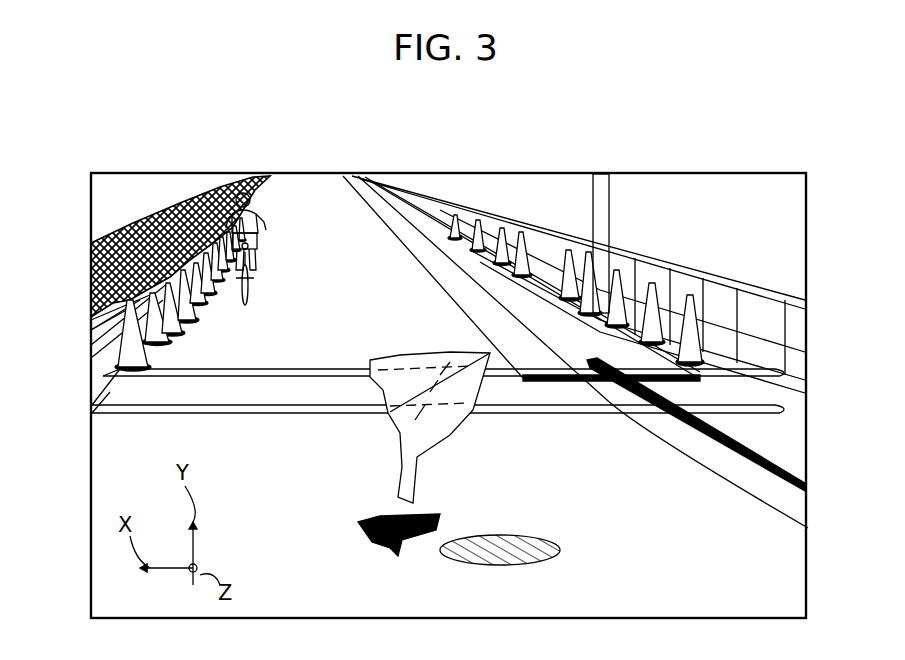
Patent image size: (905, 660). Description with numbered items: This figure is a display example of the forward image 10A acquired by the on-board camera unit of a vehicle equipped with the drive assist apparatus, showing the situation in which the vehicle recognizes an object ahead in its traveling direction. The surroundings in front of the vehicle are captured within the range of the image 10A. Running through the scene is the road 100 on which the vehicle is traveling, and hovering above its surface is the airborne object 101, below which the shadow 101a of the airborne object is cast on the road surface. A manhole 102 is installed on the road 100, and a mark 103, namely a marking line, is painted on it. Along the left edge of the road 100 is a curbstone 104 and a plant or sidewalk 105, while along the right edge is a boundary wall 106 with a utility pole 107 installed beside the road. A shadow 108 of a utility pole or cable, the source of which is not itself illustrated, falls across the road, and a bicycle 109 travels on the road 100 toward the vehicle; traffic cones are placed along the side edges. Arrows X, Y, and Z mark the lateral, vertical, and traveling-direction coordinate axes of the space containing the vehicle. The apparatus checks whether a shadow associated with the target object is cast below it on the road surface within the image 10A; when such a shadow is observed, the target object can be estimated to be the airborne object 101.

The image 10A is at (117, 173).
The road 100 is at (305, 198).
The airborne object 101 is at (400, 358).
The shadow of the airborne object 101a is at (362, 525).
The manhole 102 is at (525, 541).
The mark 103 is at (120, 383).
The curbstone 104 is at (91, 320).
The plant or sidewalk 105 is at (91, 245).
The boundary wall 106 is at (763, 318).
The utility pole 107 is at (604, 185).
The shadow of a utility pole or a cable 108 is at (358, 176).
The bicycle 109 is at (247, 193).